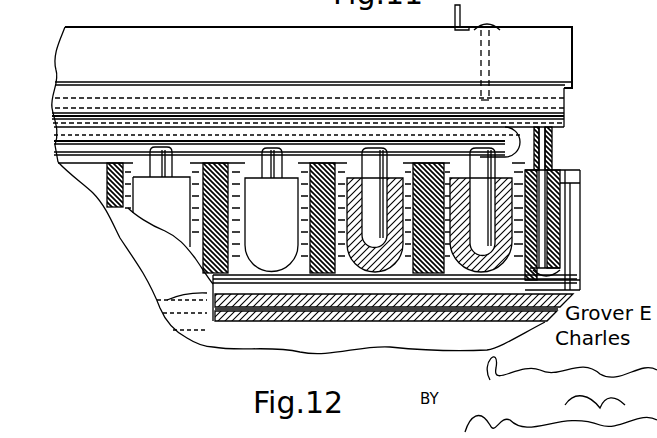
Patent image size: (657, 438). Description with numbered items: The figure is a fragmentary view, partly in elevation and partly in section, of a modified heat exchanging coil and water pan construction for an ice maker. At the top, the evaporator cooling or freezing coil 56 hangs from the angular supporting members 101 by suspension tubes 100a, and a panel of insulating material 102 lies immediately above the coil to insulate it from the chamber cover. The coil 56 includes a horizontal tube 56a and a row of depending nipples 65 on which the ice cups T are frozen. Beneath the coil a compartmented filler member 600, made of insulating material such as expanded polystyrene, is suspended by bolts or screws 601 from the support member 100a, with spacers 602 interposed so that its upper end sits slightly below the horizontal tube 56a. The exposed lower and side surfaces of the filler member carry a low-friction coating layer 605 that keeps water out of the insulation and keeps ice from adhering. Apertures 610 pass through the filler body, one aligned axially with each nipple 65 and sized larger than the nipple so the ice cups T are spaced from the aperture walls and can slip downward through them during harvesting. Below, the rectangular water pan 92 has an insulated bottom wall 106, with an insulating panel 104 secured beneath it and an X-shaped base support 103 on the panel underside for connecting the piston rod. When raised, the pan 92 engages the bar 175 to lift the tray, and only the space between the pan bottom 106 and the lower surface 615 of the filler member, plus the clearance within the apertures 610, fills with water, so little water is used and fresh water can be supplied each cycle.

The horizontal tube 56a is at (102, 128).
The evaporator cooling coil 56 is at (220, 141).
The depending nipples 65 is at (162, 162).
The ice cups T is at (350, 172).
The angular supporting members 101 is at (460, 22).
The panel of insulating material 102 is at (562, 72).
The suspension tubes 100a is at (560, 101).
The spacers 602 is at (555, 146).
The bolts or screws 601 is at (577, 176).
The compartmented filler member 600 is at (558, 212).
The layer 605 is at (540, 232).
The apertures 610 is at (537, 264).
The bar 175 is at (578, 288).
The water pan 92 is at (143, 245).
The bottom wall 106 is at (160, 317).
The base support 103 is at (213, 352).
The lower surface 615 is at (300, 274).
The insulating panel 104 is at (382, 337).